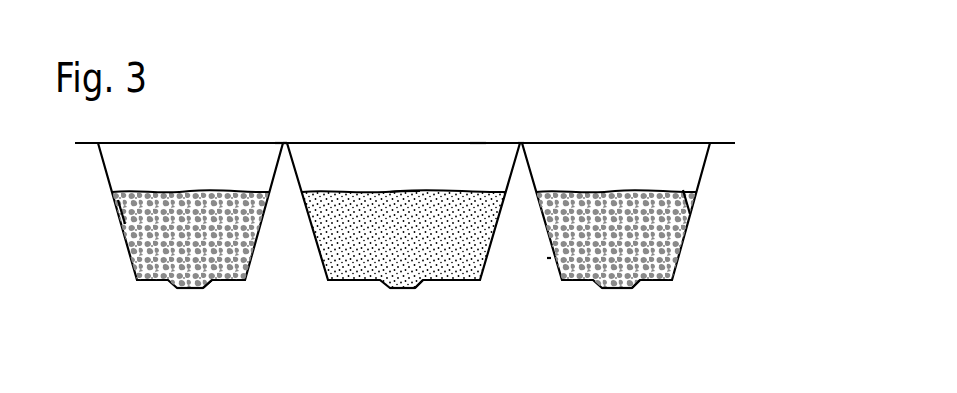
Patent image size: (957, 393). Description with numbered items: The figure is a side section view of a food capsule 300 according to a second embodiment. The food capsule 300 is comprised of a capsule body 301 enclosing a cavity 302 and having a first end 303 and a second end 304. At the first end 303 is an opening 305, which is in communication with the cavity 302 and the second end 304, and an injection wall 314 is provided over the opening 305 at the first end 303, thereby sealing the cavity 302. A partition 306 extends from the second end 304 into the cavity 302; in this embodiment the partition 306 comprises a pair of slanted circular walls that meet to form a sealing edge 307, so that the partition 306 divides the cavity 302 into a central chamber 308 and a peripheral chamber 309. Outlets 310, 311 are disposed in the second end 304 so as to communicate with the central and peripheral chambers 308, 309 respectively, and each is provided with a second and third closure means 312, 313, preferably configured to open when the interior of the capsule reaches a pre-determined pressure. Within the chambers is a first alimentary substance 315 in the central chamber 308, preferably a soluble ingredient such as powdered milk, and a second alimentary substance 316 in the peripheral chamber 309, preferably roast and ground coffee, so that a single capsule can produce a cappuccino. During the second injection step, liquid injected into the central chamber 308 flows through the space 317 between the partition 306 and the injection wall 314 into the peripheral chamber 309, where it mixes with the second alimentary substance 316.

The food capsule 300 is at (408, 118).
The capsule body 301 is at (712, 170).
The cavity 302 is at (380, 146).
The first end 303 is at (521, 143).
The second end 304 is at (438, 285).
The opening 305 is at (288, 143).
The partition 306 is at (547, 270).
The sealing edge 307 is at (300, 138).
The central chamber 308 is at (340, 265).
The peripheral chamber 309 is at (152, 260).
The outlet 310 is at (410, 293).
The outlet 311 is at (200, 293).
The second closure means 312 is at (400, 310).
The third closure means 313 is at (187, 310).
The injection wall 314 is at (478, 130).
The first alimentary substance 315 is at (410, 183).
The second alimentary substance 316 is at (128, 231).
The space 317 is at (279, 143).